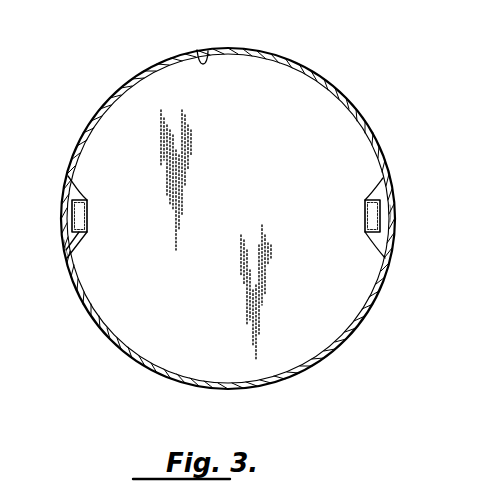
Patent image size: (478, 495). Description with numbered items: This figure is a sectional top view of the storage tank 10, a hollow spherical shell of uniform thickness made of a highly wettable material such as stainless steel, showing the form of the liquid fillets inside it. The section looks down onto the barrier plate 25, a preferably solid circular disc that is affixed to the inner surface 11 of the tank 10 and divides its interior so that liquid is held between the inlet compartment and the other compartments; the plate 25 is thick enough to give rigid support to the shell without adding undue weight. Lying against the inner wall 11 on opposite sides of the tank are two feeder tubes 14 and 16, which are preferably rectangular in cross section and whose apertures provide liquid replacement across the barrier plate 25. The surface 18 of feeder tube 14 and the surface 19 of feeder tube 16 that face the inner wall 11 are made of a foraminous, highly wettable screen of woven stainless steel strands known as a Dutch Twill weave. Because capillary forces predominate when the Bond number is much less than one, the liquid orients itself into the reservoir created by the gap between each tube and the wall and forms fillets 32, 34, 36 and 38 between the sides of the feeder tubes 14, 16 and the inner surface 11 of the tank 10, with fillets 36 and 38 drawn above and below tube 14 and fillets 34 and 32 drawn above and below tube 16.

The storage tank 10 is at (322, 68).
The inner surface 11 is at (200, 52).
The barrier plate 25 is at (250, 175).
The surface of feeder tube 18 is at (73, 212).
The fillet 36 is at (80, 190).
The fillet 38 is at (84, 245).
The feeder tube 14 is at (66, 247).
The feeder tube 16 is at (364, 218).
The fillet 34 is at (376, 191).
The fillet 32 is at (371, 243).
The surface of feeder tube 19 is at (380, 213).